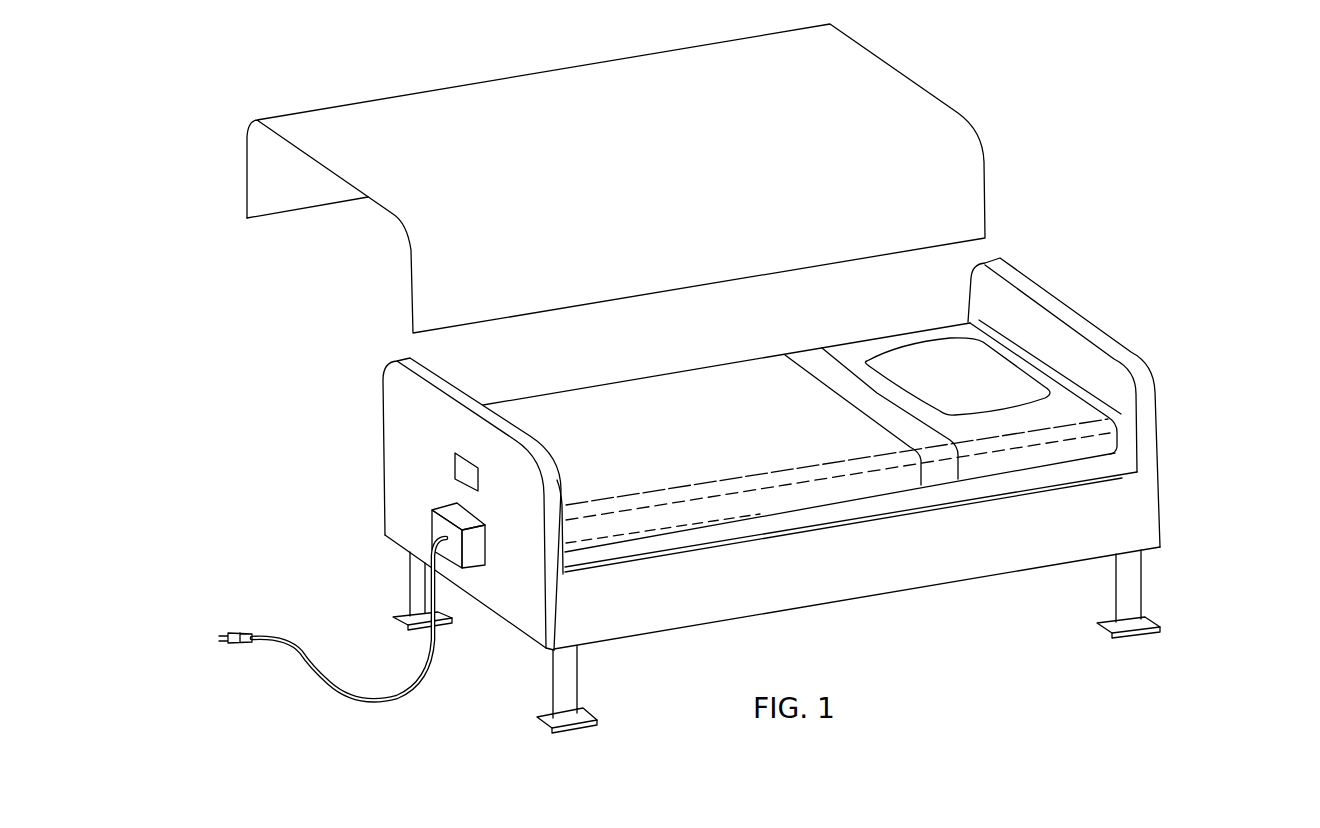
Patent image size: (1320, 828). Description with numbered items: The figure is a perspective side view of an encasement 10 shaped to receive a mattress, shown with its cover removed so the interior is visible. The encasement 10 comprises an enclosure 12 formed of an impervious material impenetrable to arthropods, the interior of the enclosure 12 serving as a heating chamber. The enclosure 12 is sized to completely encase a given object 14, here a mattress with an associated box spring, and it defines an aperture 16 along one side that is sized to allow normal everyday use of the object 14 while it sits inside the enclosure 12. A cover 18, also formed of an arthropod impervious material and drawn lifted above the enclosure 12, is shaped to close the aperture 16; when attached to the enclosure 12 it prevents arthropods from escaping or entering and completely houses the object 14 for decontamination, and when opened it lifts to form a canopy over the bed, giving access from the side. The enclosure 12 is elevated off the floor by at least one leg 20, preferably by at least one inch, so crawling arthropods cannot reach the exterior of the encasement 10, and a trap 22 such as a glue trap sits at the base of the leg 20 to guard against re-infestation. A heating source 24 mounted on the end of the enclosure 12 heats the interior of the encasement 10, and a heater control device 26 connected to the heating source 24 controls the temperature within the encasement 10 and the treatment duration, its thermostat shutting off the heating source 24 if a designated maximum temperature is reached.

The encasement 10 is at (276, 366).
The enclosure 12 is at (1183, 494).
The object 14 is at (1032, 468).
The aperture 16 is at (1097, 343).
The cover 18 is at (1000, 96).
The leg 20 is at (1160, 574).
The trap 22 is at (1170, 632).
The heating source 24 is at (424, 521).
The heater control device 26 is at (449, 464).